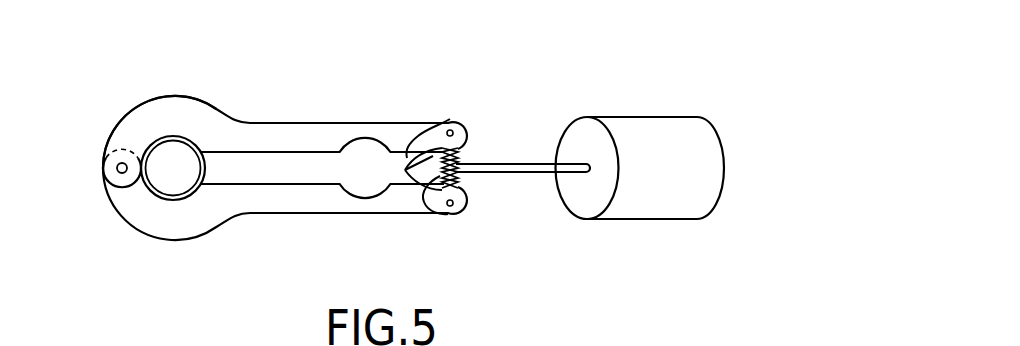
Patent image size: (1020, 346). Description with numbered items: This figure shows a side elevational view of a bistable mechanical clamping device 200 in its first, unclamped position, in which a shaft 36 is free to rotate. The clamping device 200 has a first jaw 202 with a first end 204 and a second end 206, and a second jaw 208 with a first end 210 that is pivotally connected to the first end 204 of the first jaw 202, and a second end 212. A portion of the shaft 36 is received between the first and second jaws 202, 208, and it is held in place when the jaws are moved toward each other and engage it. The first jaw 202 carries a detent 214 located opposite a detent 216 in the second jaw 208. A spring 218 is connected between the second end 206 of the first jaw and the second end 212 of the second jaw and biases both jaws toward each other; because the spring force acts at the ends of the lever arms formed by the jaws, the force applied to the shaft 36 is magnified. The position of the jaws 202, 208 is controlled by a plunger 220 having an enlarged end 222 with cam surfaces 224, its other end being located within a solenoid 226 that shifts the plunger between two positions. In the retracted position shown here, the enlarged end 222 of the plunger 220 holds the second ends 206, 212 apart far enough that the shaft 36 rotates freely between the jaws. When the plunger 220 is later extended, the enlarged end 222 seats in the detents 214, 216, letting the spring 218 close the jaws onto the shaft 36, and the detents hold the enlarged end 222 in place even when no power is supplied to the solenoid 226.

The bistable mechanical clamping device 200 is at (575, 50).
The first jaw 202 is at (245, 124).
The first end of first jaw 204 is at (130, 124).
The second end of first jaw 206 is at (396, 133).
The second jaw 208 is at (240, 214).
The first end of second jaw 210 is at (138, 213).
The second end of second jaw 212 is at (390, 205).
The detent 214 is at (368, 139).
The detent 216 is at (365, 199).
The spring 218 is at (458, 152).
The plunger 220 is at (530, 163).
The enlarged end 222 is at (437, 215).
The cam surfaces 224 is at (452, 122).
The solenoid 226 is at (664, 118).
The shaft 36 is at (165, 137).